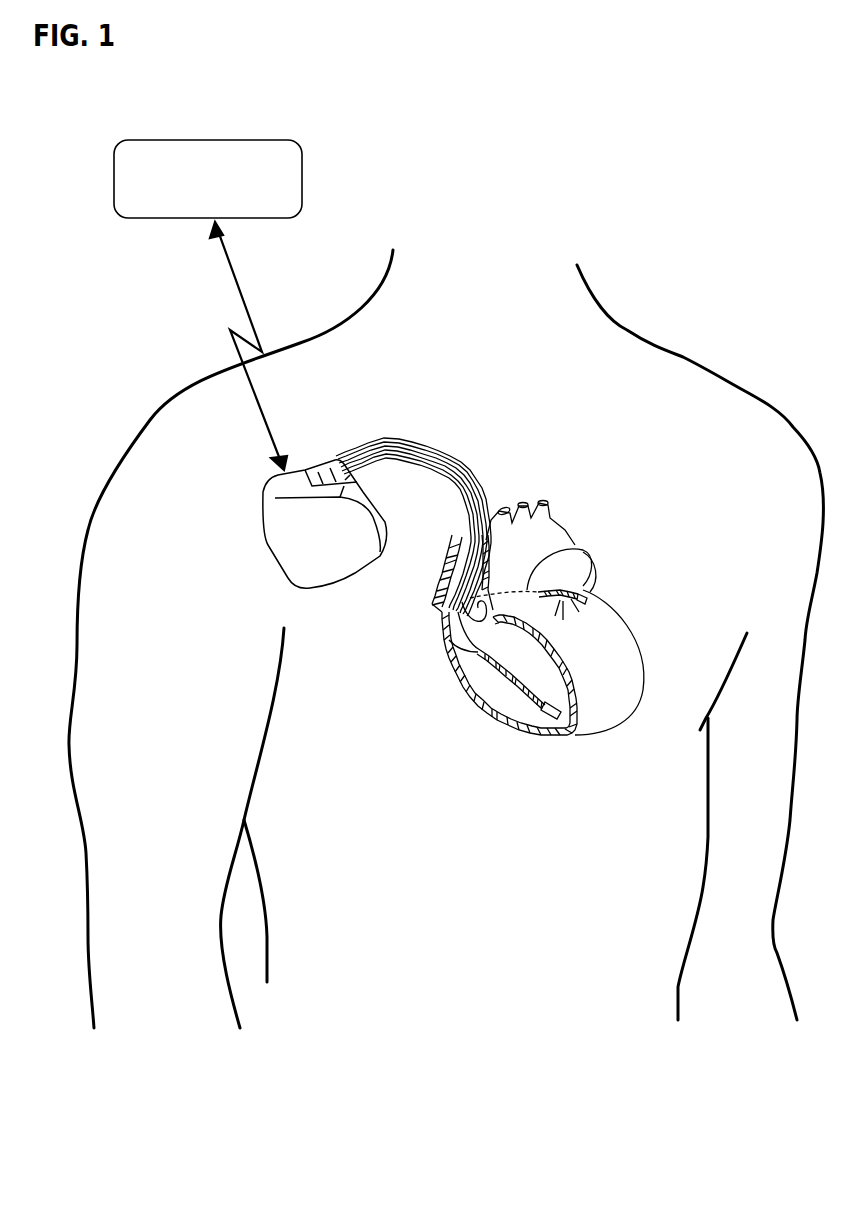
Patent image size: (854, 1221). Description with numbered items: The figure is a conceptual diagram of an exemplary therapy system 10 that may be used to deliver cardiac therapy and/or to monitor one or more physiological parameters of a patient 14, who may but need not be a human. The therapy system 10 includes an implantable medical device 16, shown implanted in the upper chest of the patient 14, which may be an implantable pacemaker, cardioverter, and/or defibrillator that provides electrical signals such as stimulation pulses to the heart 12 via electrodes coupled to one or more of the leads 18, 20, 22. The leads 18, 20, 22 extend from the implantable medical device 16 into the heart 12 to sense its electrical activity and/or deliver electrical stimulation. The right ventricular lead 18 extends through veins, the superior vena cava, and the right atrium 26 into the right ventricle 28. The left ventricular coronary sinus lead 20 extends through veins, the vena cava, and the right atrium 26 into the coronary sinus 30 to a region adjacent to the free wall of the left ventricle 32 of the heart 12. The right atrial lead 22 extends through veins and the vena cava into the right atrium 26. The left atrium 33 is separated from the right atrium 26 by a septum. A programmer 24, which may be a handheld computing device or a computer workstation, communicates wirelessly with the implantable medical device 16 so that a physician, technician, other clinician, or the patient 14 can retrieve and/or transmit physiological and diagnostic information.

The therapy system 10 is at (649, 150).
The heart 12 is at (525, 653).
The patient 14 is at (683, 357).
The implantable medical device 16 is at (272, 550).
The right ventricular lead 18 is at (440, 462).
The left ventricular coronary sinus lead 20 is at (478, 482).
The right atrial lead 22 is at (461, 494).
The programmer 24 is at (220, 203).
The right atrium 26 is at (450, 627).
The right ventricle 28 is at (493, 690).
The coronary sinus 30 is at (504, 594).
The left ventricle 32 is at (610, 645).
The left atrium 33 is at (545, 546).